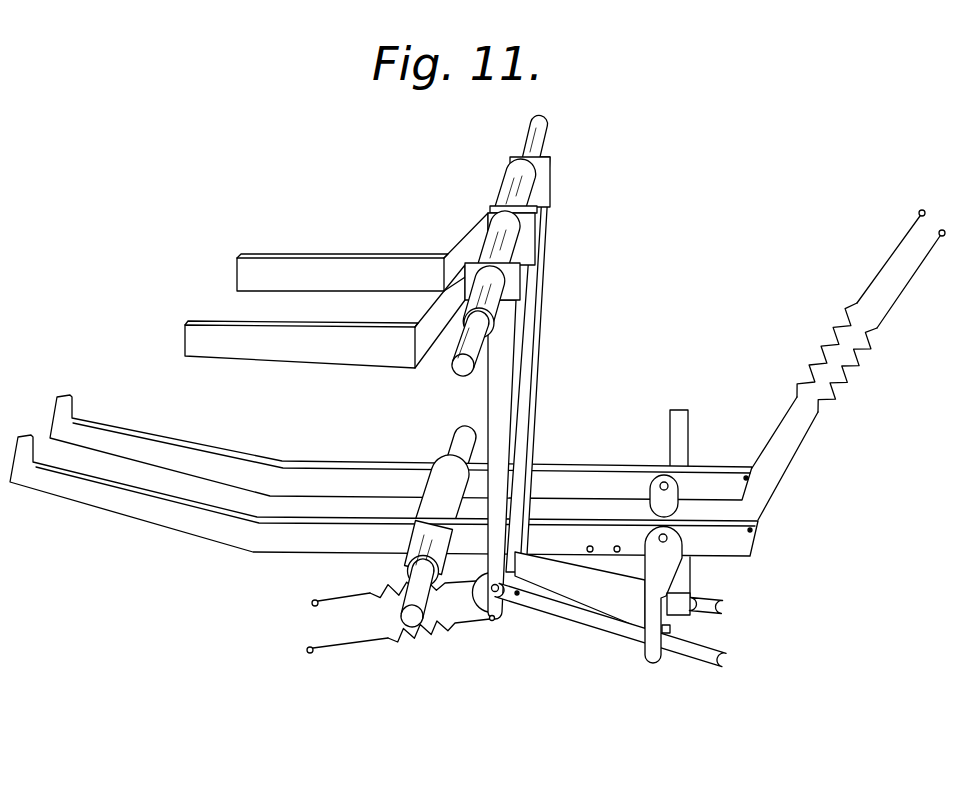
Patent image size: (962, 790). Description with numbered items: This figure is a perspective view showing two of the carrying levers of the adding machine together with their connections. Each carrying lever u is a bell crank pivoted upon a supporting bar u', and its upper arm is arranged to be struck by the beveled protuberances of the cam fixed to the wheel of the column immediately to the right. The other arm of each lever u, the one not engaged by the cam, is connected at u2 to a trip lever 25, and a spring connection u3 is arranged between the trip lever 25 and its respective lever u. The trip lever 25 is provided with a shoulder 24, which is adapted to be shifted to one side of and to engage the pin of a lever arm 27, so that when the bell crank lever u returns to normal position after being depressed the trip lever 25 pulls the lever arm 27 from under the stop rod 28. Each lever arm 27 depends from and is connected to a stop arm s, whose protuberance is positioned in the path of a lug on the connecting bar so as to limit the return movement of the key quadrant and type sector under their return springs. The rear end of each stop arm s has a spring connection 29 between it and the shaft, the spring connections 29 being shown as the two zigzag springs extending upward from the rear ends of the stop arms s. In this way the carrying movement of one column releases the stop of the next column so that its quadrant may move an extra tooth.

The lever u is at (336, 302).
The supporting bar u' is at (549, 343).
The connection u2 is at (490, 613).
The spring connection u3 is at (517, 578).
The stop arm s is at (217, 458).
The shoulder 24 is at (638, 620).
The trip lever 25 is at (580, 617).
The lever arm 27 is at (700, 580).
The stop rod 28 is at (690, 613).
The spring connection 29 is at (840, 375).